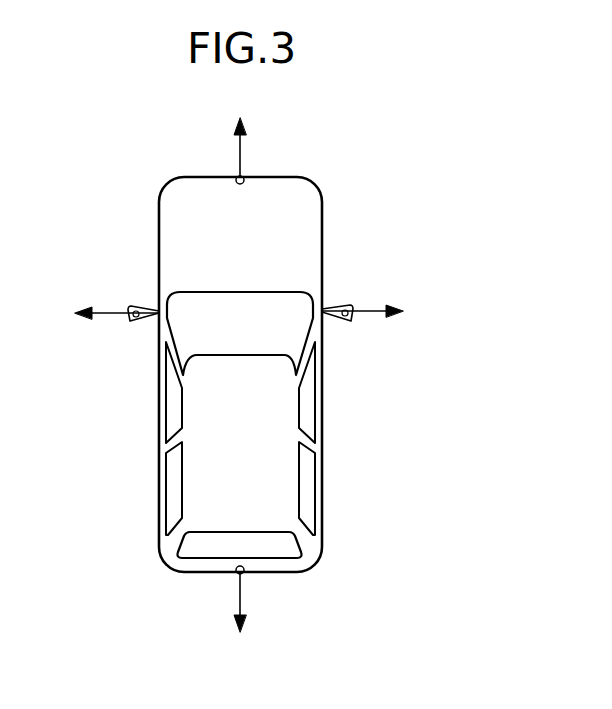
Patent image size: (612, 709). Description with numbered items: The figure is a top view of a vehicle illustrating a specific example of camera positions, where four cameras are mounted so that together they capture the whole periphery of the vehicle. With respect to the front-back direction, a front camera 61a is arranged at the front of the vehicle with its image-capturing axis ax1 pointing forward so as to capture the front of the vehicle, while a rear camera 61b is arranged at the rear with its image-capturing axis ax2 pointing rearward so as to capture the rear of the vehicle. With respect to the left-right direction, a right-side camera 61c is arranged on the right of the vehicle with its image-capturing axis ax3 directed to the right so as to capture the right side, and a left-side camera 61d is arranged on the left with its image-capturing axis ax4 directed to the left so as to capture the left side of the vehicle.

The front camera 61a is at (244, 179).
The rear camera 61b is at (234, 575).
The right-side camera 61c is at (343, 320).
The left-side camera 61d is at (137, 320).
The image-capturing axis ax1 is at (237, 168).
The image-capturing axis ax2 is at (247, 611).
The image-capturing axis ax3 is at (372, 311).
The image-capturing axis ax4 is at (113, 313).